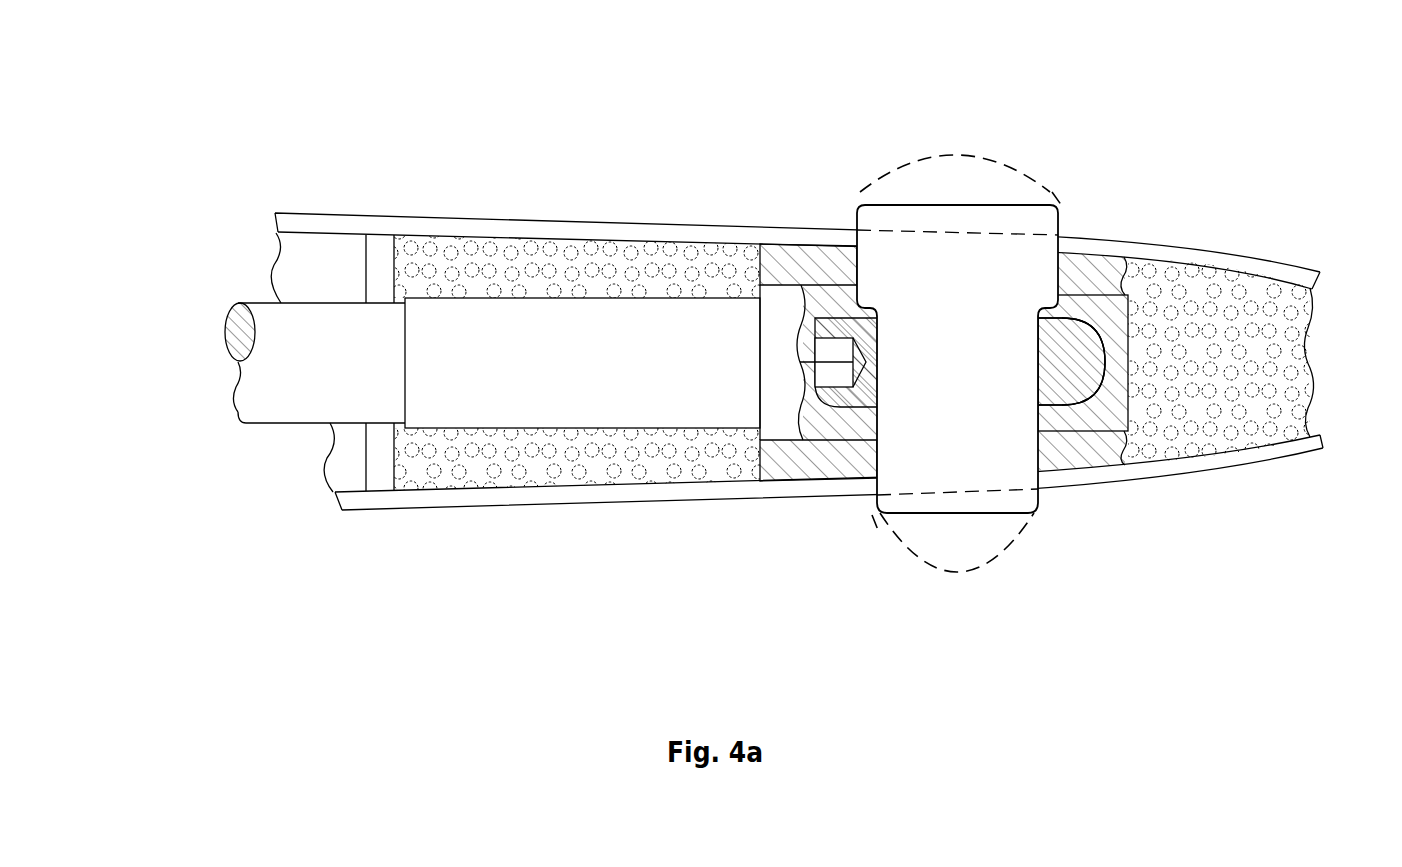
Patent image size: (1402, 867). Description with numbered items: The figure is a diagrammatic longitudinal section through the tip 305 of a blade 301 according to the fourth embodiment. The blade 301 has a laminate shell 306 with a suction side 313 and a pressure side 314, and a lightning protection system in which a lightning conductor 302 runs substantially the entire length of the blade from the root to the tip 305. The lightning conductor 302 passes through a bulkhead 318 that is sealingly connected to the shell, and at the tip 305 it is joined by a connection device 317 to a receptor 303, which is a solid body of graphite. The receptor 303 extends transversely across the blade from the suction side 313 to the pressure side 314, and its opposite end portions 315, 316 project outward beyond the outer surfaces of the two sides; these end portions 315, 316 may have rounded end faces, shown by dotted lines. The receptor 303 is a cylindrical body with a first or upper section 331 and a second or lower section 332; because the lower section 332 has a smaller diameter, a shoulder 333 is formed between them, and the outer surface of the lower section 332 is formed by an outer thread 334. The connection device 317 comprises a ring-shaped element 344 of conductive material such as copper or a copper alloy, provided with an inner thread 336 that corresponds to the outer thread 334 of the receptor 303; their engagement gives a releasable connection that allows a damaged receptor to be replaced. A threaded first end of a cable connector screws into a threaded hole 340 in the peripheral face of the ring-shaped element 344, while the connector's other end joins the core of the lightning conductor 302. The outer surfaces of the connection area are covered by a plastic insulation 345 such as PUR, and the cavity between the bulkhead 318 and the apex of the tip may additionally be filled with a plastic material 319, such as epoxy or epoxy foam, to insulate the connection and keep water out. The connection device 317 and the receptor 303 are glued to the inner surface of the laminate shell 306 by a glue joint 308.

The blade 301 is at (512, 148).
The lightning conductor 302 is at (253, 398).
The lightning receptor 303 is at (1023, 258).
The tip 305 is at (675, 185).
The laminate shell 306 is at (560, 238).
The glue joint 308 is at (885, 452).
The suction side 313 is at (413, 215).
The pressure side 314 is at (398, 512).
The opposite end portion 315 is at (995, 203).
The opposite end portion 316 is at (967, 513).
The connection device 317 is at (1137, 380).
The bulkhead 318 is at (360, 443).
The plastic material 319 is at (1267, 430).
The first or upper section 331 is at (870, 265).
The second or lower section 332 is at (855, 465).
The shoulder 333 is at (1063, 317).
The outer thread 334 is at (870, 415).
The inner thread 336 is at (1040, 352).
The hole 340 is at (823, 373).
The ring-shaped element 344 is at (1085, 347).
The plastic insulation 345 is at (545, 388).